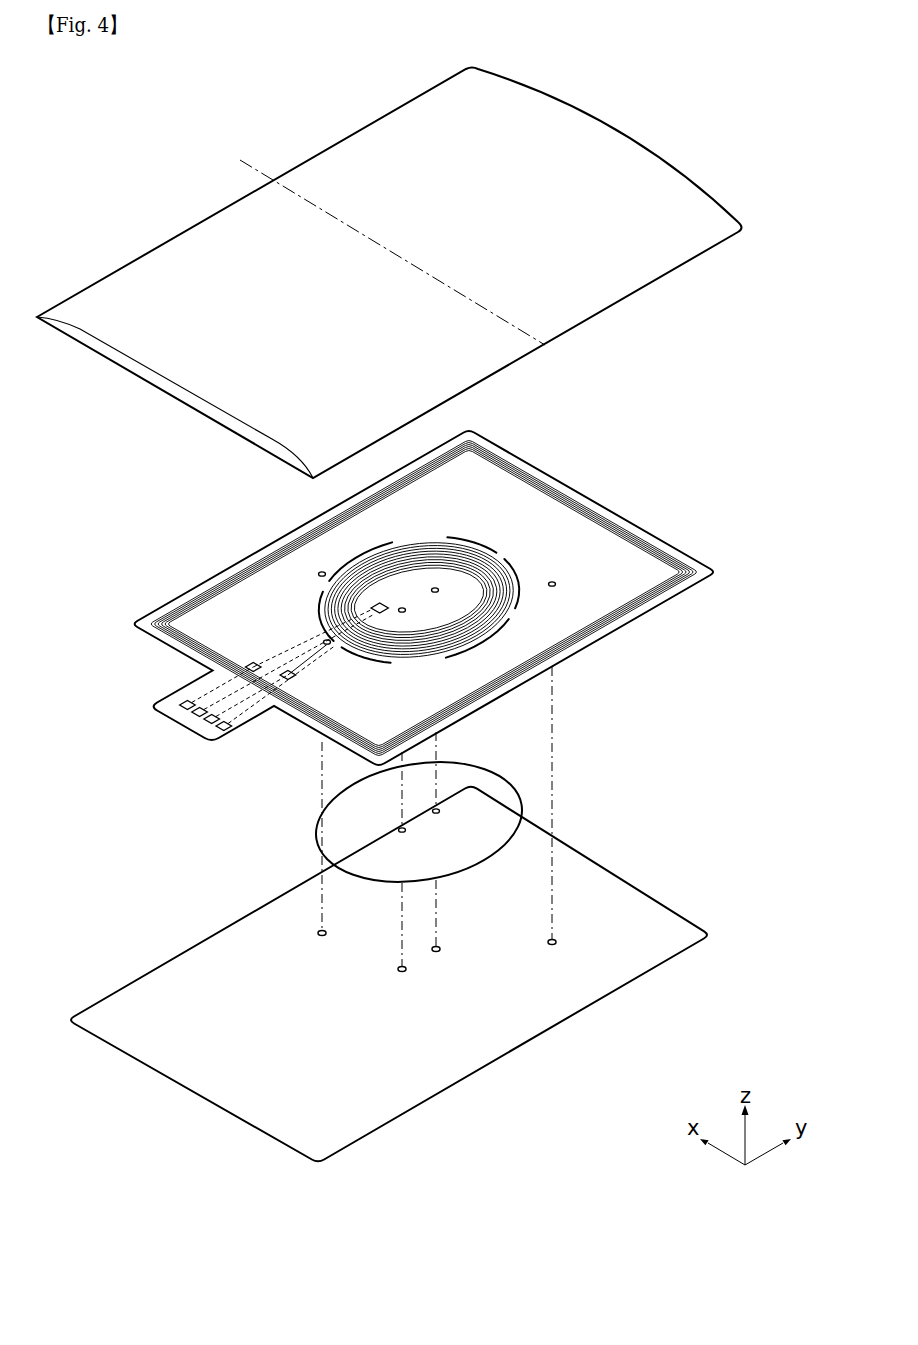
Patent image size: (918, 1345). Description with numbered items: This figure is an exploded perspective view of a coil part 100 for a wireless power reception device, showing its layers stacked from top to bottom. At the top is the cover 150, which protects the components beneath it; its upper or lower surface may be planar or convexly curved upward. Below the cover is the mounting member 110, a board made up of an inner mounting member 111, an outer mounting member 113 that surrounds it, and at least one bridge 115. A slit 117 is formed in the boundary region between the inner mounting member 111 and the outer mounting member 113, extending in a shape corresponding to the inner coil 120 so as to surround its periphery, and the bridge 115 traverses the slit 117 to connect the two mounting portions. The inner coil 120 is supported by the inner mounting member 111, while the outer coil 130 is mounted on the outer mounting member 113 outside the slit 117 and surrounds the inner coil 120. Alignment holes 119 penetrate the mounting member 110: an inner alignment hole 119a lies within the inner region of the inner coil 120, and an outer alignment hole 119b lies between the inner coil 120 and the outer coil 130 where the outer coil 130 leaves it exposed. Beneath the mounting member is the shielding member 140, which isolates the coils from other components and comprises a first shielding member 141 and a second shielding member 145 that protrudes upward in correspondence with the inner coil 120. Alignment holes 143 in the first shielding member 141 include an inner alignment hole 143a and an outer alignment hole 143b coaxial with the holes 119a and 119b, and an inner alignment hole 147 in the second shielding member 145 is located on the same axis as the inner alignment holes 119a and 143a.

The coil part 100 is at (88, 100).
The cover 150 is at (140, 280).
The mounting member 110 is at (564, 472).
The inner mounting member 111 is at (523, 560).
The outer mounting member 113 is at (553, 527).
The bridge 115 is at (472, 582).
The slit 117 is at (500, 620).
The alignment holes 119 is at (105, 530).
The inner alignment hole 119a is at (365, 572).
The outer alignment hole 119b is at (322, 572).
The inner coil 120 is at (177, 630).
The outer coil 130 is at (674, 562).
The shielding member 140 is at (637, 760).
The first shielding member 141 is at (582, 868).
The alignment holes 143 is at (613, 1040).
The inner alignment hole 143a is at (438, 951).
The outer alignment hole 143b is at (554, 943).
The second shielding member 145 is at (508, 773).
The inner alignment hole 147 is at (402, 830).